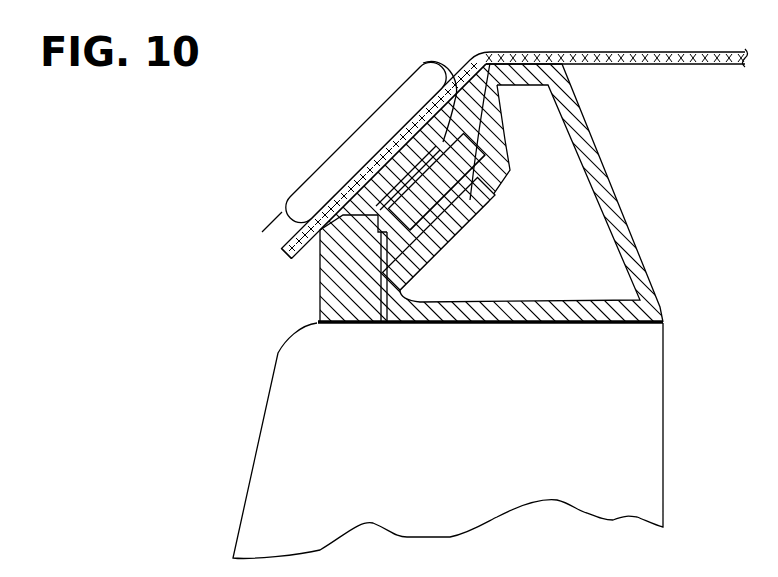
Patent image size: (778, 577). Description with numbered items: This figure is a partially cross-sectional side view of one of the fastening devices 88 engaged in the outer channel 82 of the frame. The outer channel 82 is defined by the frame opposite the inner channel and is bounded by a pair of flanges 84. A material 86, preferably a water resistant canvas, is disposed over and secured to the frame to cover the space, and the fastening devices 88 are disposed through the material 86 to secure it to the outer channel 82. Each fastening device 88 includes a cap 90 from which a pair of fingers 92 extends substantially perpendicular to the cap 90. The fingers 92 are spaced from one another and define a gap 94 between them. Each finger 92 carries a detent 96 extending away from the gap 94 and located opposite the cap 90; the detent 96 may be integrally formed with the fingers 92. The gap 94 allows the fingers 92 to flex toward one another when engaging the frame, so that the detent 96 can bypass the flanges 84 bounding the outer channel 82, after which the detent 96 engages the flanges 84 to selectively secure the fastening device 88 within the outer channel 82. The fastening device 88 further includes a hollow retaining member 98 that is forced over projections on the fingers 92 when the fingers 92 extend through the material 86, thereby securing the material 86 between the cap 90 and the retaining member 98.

The outer channel 82 is at (477, 150).
The flanges 84 is at (428, 66).
The material 86 is at (675, 52).
The fastening devices 88 is at (384, 93).
The cap 90 is at (316, 182).
The fingers 92 is at (470, 197).
The gap 94 is at (445, 203).
The detent 96 is at (489, 55).
The retaining member 98 is at (318, 262).